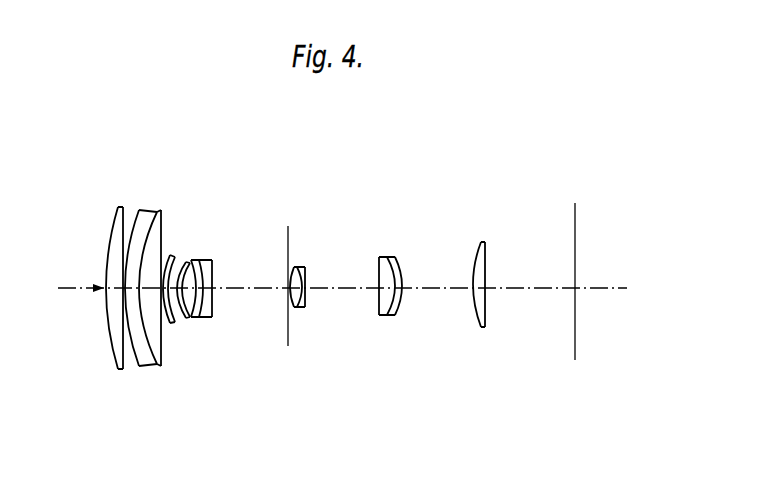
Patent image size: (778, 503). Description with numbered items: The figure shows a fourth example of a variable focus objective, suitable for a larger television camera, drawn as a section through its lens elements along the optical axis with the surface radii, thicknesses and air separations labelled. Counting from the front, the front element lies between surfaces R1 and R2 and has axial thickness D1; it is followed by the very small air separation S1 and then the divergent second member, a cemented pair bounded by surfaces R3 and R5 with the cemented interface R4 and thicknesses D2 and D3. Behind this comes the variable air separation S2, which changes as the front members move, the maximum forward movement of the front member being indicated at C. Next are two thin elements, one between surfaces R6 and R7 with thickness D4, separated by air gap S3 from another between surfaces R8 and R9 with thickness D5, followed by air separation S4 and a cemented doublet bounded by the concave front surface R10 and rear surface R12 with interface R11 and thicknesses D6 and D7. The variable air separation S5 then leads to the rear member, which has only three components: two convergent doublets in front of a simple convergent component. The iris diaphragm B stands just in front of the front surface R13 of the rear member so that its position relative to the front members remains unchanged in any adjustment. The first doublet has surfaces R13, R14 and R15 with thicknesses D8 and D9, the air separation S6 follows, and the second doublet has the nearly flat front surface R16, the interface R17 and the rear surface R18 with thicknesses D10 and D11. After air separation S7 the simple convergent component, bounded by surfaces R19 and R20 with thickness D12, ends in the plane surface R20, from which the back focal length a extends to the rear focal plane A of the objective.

The radius of curvature of the first surface R1 is at (107, 256).
The radius of curvature of the second surface R2 is at (119, 228).
The radius of curvature of the third surface R3 is at (136, 225).
The radius of curvature of the fourth surface R4 is at (146, 255).
The radius of curvature of the fifth surface R5 is at (156, 240).
The radius of curvature of the sixth surface R6 is at (161, 270).
The radius of curvature of the seventh surface R7 is at (169, 272).
The radius of curvature of the eighth surface R8 is at (178, 270).
The radius of curvature of the ninth surface R9 is at (192, 268).
The radius of curvature of the tenth surface R10 is at (195, 262).
The radius of curvature of the eleventh surface R11 is at (214, 270).
The radius of curvature of the twelfth surface R12 is at (214, 290).
The radius of curvature of the thirteenth surface R13 is at (302, 266).
The radius of curvature of the fourteenth surface R14 is at (302, 270).
The radius of curvature of the fifteenth surface R15 is at (306, 274).
The radius of curvature of the sixteenth surface R16 is at (383, 260).
The radius of curvature of the seventeenth surface R17 is at (396, 268).
The radius of curvature of the eighteenth surface R18 is at (402, 280).
The radius of curvature of the nineteenth surface R19 is at (482, 244).
The radius of curvature of the twentieth surface R20 is at (484, 268).
The axial thickness of the first element D1 is at (110, 295).
The axial thickness of the second element D2 is at (122, 300).
The axial thickness of the third element D3 is at (145, 305).
The axial thickness of the fourth element D4 is at (168, 308).
The axial thickness of the fifth element D5 is at (196, 300).
The axial thickness of the sixth element D6 is at (274, 333).
The axial thickness of the seventh element D7 is at (212, 298).
The axial thickness of the eighth element D8 is at (305, 320).
The axial thickness of the ninth element D9 is at (307, 294).
The axial thickness of the tenth element D10 is at (385, 302).
The axial thickness of the eleventh element D11 is at (403, 290).
The axial thickness of the twelfth element D12 is at (485, 292).
The first axial air separation S1 is at (125, 300).
The second axial air separation S2 is at (157, 310).
The third axial air separation S3 is at (220, 318).
The fourth axial air separation S4 is at (215, 325).
The fifth axial air separation S5 is at (302, 310).
The sixth axial air separation S6 is at (403, 320).
The seventh axial air separation S7 is at (480, 315).
The rear focal plane A is at (577, 217).
The iris diaphragm B is at (288, 237).
The maximum forward movement of the front member C is at (96, 291).
The back focal length a is at (527, 285).